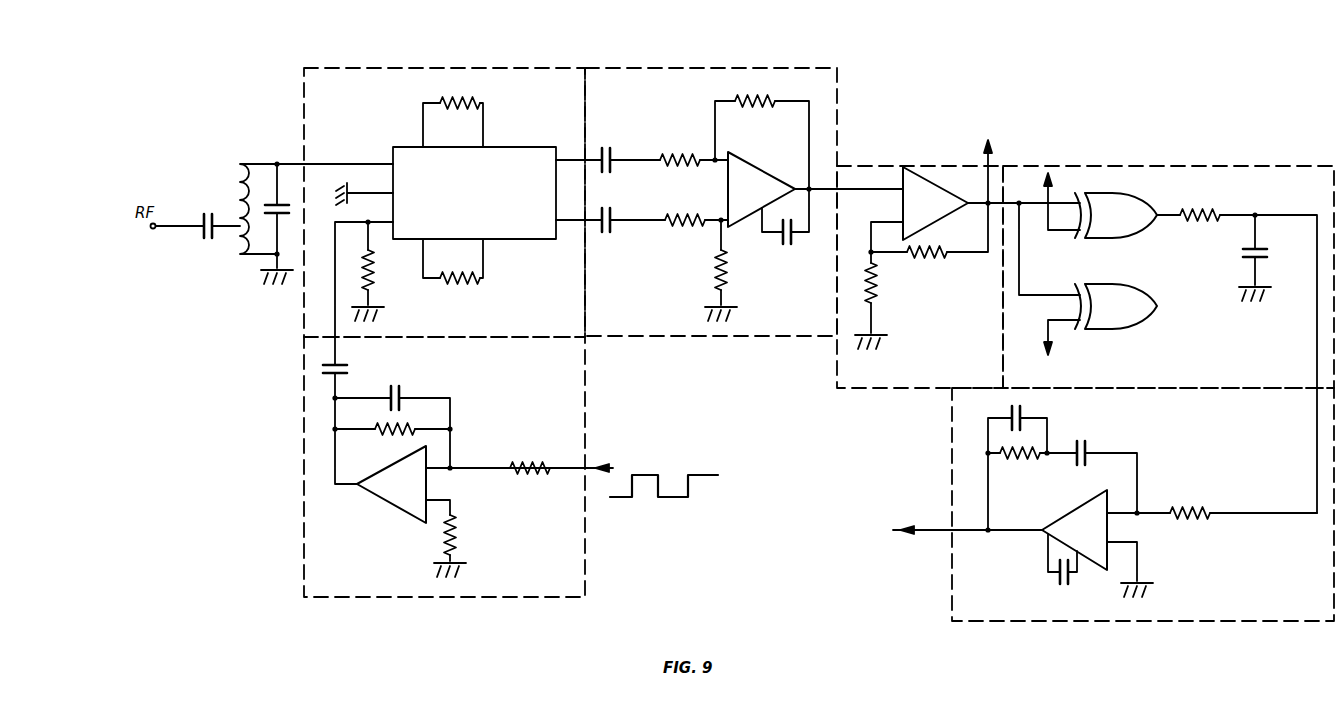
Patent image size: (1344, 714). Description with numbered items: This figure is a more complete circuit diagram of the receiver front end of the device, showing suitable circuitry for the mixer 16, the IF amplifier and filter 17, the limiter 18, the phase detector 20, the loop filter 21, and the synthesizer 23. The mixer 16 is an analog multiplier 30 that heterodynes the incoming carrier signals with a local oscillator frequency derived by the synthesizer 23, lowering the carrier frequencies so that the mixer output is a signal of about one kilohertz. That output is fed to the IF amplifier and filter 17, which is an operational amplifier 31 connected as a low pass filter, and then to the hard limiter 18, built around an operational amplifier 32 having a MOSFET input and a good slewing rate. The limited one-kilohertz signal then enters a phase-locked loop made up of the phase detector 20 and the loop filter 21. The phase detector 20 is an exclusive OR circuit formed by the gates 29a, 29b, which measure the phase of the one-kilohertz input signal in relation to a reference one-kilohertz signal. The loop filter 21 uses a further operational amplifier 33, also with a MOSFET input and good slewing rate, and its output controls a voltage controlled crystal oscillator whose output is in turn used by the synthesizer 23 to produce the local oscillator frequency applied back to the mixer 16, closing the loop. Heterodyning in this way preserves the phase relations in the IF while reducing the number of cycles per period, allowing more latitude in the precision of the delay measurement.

The mixer 16 is at (516, 68).
The IF amplifier and filter 17 is at (606, 68).
The limiter 18 is at (872, 166).
The phase detector 20 is at (1180, 166).
The loop filter 21 is at (1288, 621).
The synthesizer 23 is at (585, 396).
The exclusive OR circuit 29a is at (1122, 238).
The exclusive OR circuit 29b is at (1130, 284).
The analog multiplier 30 is at (533, 147).
The operational amplifier 31 is at (748, 162).
The operational amplifier 32 is at (940, 182).
The operational amplifier 33 is at (1088, 500).